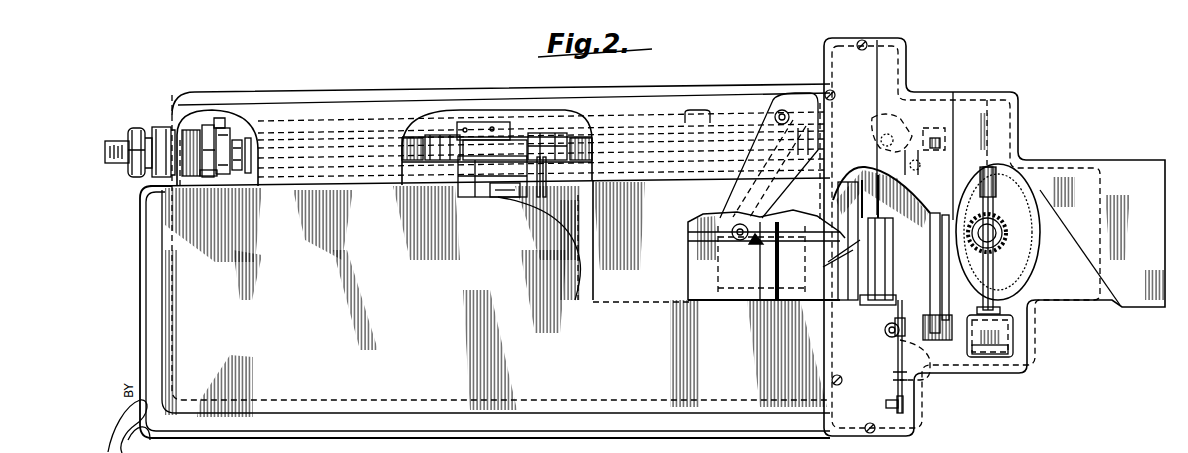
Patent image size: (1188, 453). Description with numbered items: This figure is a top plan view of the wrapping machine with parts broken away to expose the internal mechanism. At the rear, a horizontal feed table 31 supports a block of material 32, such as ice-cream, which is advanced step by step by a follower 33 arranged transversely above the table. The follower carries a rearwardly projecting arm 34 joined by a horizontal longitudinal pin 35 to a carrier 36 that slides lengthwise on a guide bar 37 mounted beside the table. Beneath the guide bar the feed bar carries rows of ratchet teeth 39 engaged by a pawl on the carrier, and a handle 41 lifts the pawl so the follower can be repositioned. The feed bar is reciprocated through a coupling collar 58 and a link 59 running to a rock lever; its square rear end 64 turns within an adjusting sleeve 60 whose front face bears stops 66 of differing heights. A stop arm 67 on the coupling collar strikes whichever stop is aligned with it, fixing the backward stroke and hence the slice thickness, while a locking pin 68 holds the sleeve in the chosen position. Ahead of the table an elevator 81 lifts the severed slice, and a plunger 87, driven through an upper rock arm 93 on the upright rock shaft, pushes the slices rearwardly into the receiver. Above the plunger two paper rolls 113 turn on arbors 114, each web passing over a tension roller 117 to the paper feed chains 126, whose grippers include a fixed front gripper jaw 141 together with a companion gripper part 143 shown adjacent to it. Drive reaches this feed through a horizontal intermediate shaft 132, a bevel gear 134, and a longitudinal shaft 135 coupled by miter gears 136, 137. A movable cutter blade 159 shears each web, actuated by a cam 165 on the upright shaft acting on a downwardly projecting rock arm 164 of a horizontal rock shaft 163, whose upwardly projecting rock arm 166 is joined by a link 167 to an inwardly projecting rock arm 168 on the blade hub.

The feed table 31 is at (485, 261).
The block of material 32 is at (647, 302).
The follower 33 is at (578, 302).
The rearwardly projecting arm 34 is at (558, 228).
The horizontal longitudinal pin 35 is at (493, 195).
The carrier 36 is at (473, 167).
The guide bar 37 is at (547, 136).
The ratchet teeth 39 is at (589, 133).
The handle 41 is at (546, 180).
The coupling collar 58 is at (218, 117).
The link 59 is at (235, 120).
The adjusting sleeve 60 is at (130, 133).
The square rear end of feed bar 64 is at (106, 149).
The stops 66 is at (200, 123).
The stop arm 67 is at (207, 177).
The locking pin 68 is at (168, 131).
The elevator 81 is at (862, 171).
The plunger 87 is at (837, 197).
The upper rock arm 93 is at (799, 177).
The paper rolls 113 is at (686, 219).
The arbors 114 is at (757, 243).
The tension roller 117 is at (829, 259).
The paper feed chains 126 is at (888, 352).
The horizontal intermediate shaft 132 is at (997, 297).
The bevel gear 134 is at (1000, 217).
The longitudinal shaft 135 is at (1023, 243).
The miter gear 136 is at (1008, 334).
The miter gear 137 is at (1010, 352).
The front gripper jaw 141 is at (905, 410).
The pin 143 is at (897, 405).
The movable cutter blade 159 is at (933, 213).
The horizontal rock shaft 163 is at (939, 295).
The downwardly projecting rock arm 164 is at (948, 262).
The cam 165 is at (1027, 210).
The upwardly projecting rock arm 166 is at (931, 146).
The link 167 is at (920, 140).
The inwardly projecting rock arm 168 is at (885, 145).